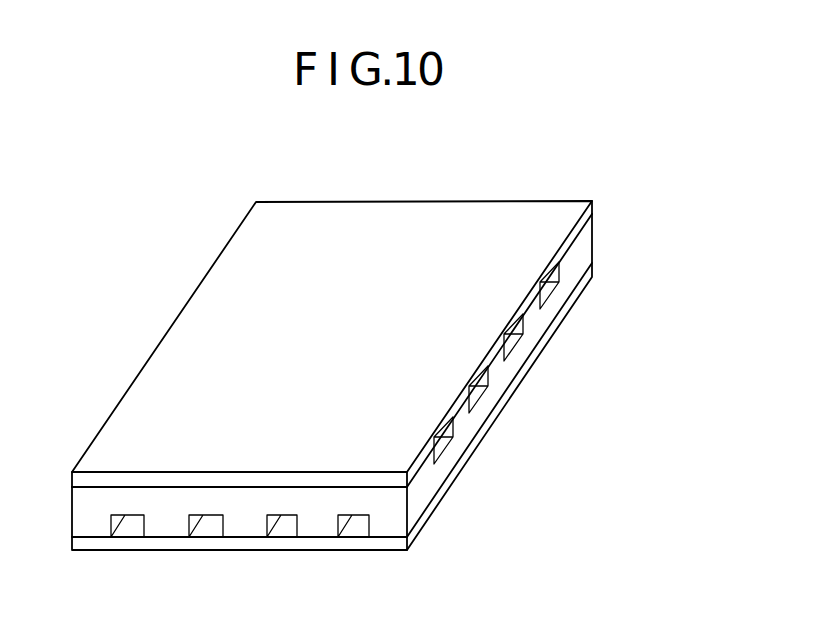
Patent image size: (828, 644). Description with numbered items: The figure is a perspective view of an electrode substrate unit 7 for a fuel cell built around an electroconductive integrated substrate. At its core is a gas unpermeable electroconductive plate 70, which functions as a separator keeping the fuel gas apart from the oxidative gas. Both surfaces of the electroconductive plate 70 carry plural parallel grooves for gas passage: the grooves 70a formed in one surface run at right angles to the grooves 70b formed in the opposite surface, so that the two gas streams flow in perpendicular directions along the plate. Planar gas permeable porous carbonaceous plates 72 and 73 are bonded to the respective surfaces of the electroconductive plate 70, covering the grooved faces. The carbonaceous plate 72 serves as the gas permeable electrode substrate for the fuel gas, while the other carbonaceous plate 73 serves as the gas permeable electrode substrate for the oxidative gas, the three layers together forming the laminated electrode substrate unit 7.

The electrode substrate unit 7 is at (394, 382).
The gas permeable porous carbonaceous plate 72 is at (594, 206).
The gas unpermeable electroconductive plate 70 is at (370, 405).
The gas permeable porous carbonaceous plate 73 is at (370, 390).
The grooves 70a is at (510, 343).
The grooves 70b is at (283, 527).